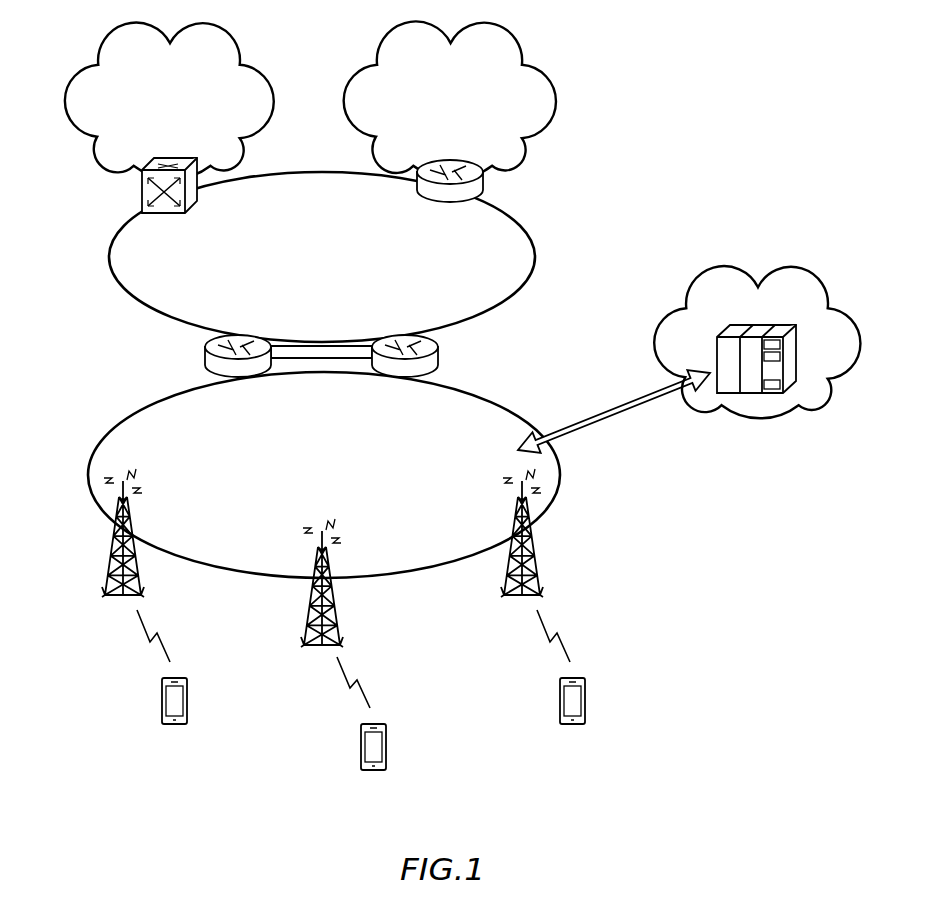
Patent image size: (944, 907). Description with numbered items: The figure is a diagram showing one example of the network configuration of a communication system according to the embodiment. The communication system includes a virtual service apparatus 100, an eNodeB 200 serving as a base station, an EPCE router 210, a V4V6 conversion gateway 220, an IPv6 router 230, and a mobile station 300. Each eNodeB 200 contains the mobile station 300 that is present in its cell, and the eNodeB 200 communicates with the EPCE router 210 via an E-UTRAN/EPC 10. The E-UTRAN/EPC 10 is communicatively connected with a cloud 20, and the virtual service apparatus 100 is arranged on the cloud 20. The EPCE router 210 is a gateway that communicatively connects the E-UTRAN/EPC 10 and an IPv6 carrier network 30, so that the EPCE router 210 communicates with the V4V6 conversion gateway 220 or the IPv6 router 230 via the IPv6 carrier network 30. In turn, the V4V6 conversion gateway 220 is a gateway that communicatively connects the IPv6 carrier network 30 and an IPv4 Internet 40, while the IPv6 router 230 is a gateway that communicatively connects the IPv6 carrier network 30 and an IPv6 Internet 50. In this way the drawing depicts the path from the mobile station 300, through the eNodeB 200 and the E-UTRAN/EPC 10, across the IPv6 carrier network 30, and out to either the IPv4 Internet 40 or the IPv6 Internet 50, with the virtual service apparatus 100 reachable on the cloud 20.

The E-UTRAN/EPC 10 is at (88, 468).
The cloud 20 is at (820, 270).
The IPv6 carrier network 30 is at (110, 262).
The IPv4 Internet 40 is at (232, 32).
The IPv6 Internet 50 is at (507, 33).
The virtual service apparatus 100 is at (772, 393).
The eNodeB 200 is at (105, 558).
The EPCE router 210 is at (208, 352).
The V4V6 conversion gateway 220 is at (140, 192).
The IPv6 router 230 is at (483, 187).
The mobile station 300 is at (187, 700).